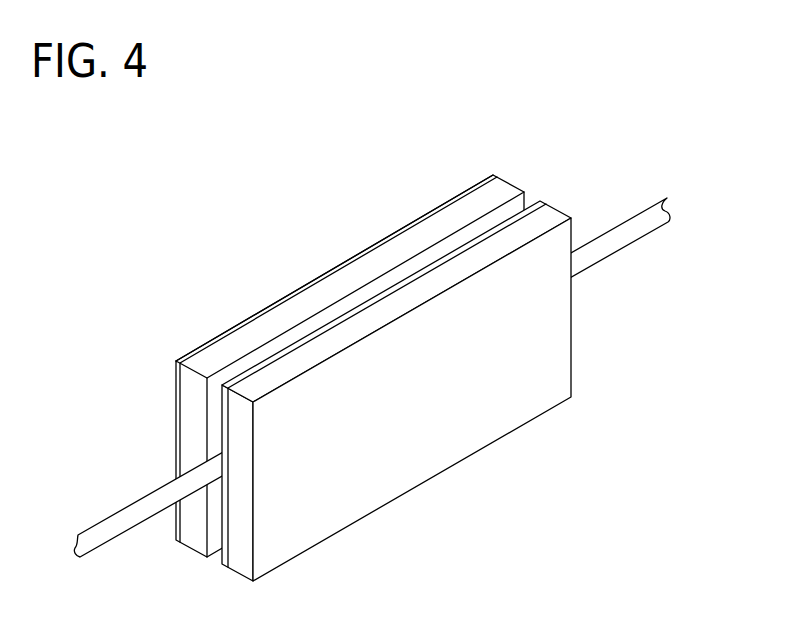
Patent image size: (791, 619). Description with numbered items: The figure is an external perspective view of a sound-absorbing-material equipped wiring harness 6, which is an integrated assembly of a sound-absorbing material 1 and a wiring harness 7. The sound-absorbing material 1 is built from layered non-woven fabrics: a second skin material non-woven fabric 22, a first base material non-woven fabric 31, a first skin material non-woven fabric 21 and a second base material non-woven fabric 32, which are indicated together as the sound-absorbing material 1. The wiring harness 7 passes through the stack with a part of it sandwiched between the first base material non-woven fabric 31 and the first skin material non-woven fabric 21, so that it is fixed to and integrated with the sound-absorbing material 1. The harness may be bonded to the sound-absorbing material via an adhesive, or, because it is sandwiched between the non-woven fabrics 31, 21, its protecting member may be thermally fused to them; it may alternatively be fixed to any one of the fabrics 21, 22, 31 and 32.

The sound-absorbing material 1 is at (372, 378).
The first skin material non-woven fabric 21 is at (255, 373).
The second skin material non-woven fabric 22 is at (197, 349).
The first base material non-woven fabric 31 is at (222, 355).
The second base material non-woven fabric 32 is at (285, 378).
The sound-absorbing-material equipped wiring harness 6 is at (422, 210).
The wiring harness 7 is at (115, 514).